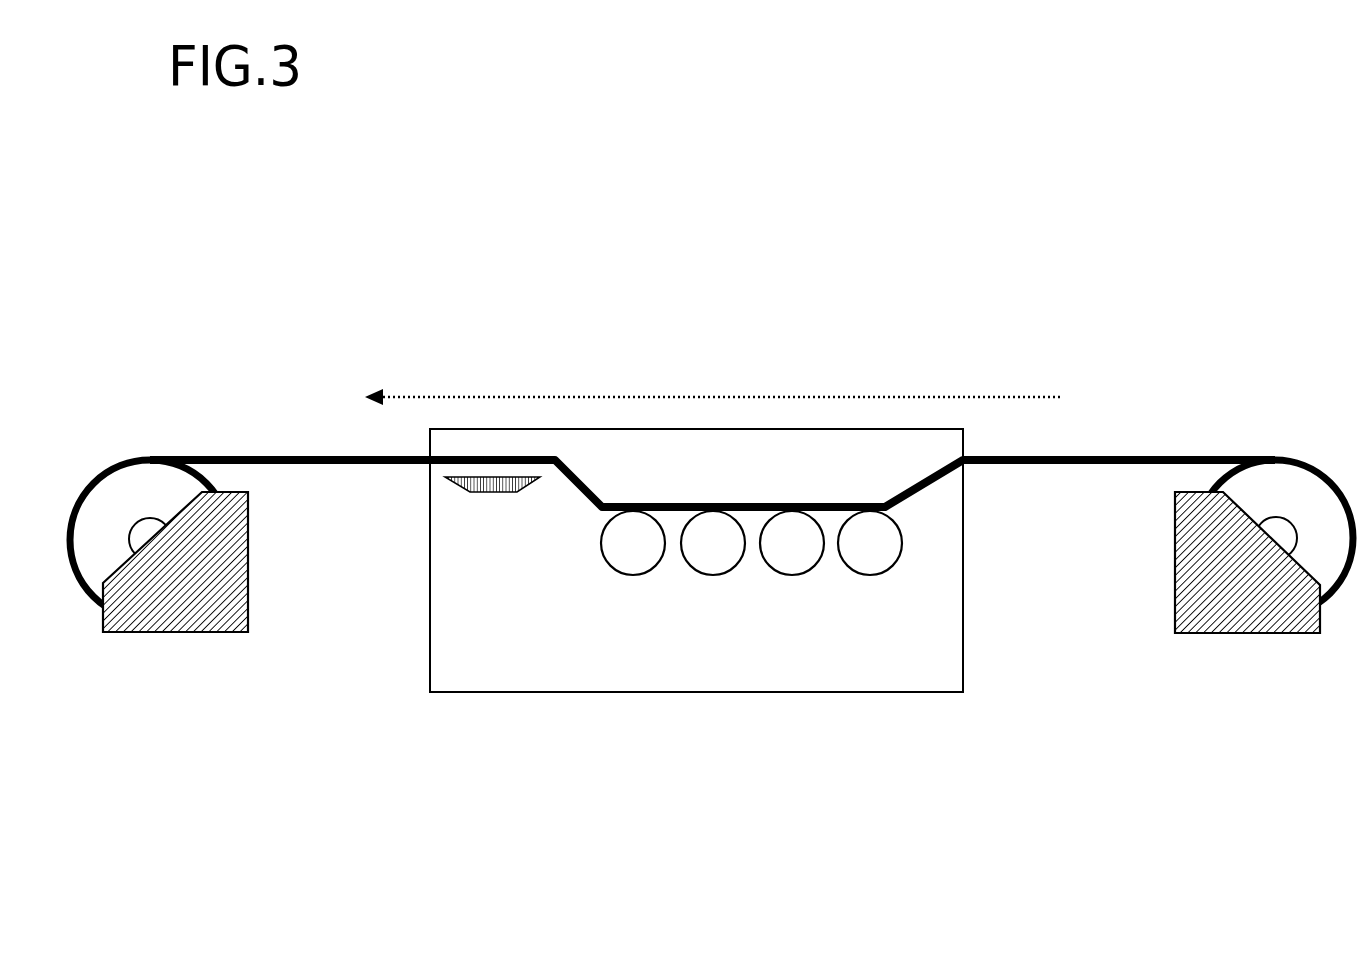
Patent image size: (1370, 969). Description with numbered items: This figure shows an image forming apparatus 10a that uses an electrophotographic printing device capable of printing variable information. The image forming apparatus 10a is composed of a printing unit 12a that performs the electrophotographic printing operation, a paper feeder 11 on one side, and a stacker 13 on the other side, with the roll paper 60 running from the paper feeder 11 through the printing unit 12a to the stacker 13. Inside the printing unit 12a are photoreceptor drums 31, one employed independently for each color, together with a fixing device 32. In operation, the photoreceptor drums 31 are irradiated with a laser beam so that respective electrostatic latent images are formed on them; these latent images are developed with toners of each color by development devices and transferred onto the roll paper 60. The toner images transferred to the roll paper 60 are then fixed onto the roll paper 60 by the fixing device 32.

The image forming apparatus 10a is at (778, 290).
The paper feeder 11 is at (1175, 570).
The printing unit 12a is at (718, 693).
The stacker 13 is at (248, 587).
The photoreceptor drums 31 is at (600, 580).
The fixing device 32 is at (482, 493).
The roll paper 60 is at (1118, 458).